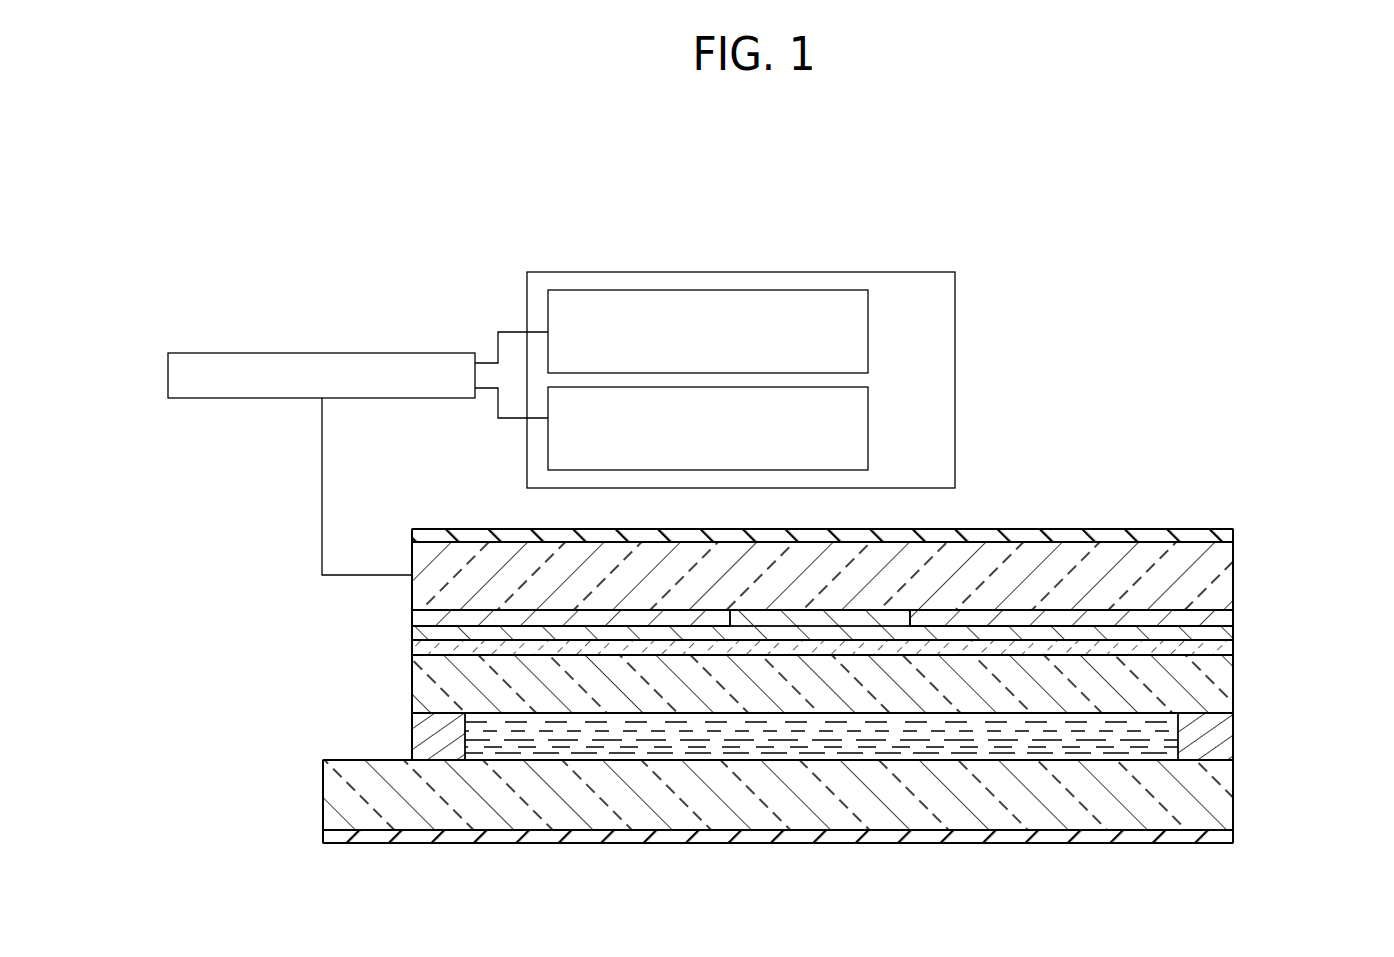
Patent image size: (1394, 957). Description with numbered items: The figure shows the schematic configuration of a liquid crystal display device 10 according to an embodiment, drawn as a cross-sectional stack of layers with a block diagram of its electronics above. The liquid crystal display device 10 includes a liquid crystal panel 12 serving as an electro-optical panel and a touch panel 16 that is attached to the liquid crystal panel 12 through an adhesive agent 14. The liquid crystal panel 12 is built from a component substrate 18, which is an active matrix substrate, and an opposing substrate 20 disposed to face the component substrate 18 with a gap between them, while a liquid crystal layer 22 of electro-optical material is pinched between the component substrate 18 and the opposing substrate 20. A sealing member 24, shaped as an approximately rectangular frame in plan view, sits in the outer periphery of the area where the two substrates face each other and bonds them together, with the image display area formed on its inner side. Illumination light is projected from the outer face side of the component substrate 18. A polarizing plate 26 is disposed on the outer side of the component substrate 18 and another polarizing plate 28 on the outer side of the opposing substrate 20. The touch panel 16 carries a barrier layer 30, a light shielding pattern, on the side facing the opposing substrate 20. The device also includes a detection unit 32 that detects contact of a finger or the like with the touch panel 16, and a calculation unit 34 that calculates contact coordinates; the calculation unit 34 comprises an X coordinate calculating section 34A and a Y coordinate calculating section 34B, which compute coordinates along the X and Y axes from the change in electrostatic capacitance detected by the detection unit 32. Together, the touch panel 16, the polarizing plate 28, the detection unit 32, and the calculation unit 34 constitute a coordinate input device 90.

The liquid crystal display device 10 is at (1224, 268).
The liquid crystal panel 12 is at (1320, 668).
The adhesive agent 14 is at (412, 638).
The touch panel 16 is at (1040, 560).
The component substrate 18 is at (1228, 793).
The opposing substrate 20 is at (1228, 683).
The liquid crystal layer 22 is at (935, 745).
The sealing member 24 is at (412, 741).
The polarizing plate 26 is at (1228, 835).
The polarizing plate 28 is at (1113, 538).
The barrier layer 30 is at (412, 622).
The detection unit 32 is at (380, 353).
The calculation unit 34 is at (663, 272).
The X coordinate calculating section 34A is at (868, 335).
The Y coordinate calculating section 34B is at (868, 425).
The coordinate input device 90 is at (372, 190).